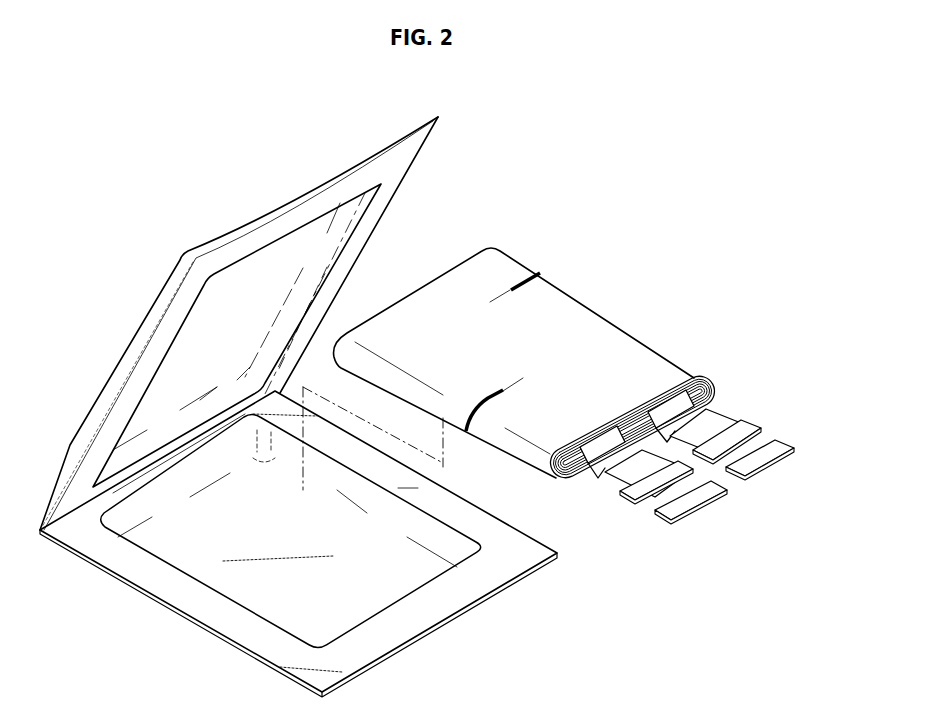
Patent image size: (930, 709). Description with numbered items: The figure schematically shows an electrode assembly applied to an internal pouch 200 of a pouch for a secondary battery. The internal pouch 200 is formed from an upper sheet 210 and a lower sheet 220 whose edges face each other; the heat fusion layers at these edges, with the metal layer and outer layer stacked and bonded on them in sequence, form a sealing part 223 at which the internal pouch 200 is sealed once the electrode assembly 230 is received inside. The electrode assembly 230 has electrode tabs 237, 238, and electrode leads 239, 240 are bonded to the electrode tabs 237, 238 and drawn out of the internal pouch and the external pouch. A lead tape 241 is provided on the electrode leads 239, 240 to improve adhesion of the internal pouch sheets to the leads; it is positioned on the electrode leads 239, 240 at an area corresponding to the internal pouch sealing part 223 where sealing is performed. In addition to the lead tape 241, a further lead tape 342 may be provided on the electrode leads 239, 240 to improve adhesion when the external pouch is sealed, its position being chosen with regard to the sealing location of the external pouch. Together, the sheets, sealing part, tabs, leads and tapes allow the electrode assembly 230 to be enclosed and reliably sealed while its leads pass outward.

The internal pouch 200 is at (98, 129).
The upper sheet 210 is at (412, 158).
The lower sheet 220 is at (408, 583).
The sealing part 223 is at (240, 637).
The electrode assembly 230 is at (664, 306).
The electrode tab 237 is at (590, 449).
The electrode tab 238 is at (672, 385).
The electrode lead 239 is at (705, 505).
The electrode lead 240 is at (770, 472).
The lead tape 241 is at (744, 420).
The lead tape 342 is at (778, 442).